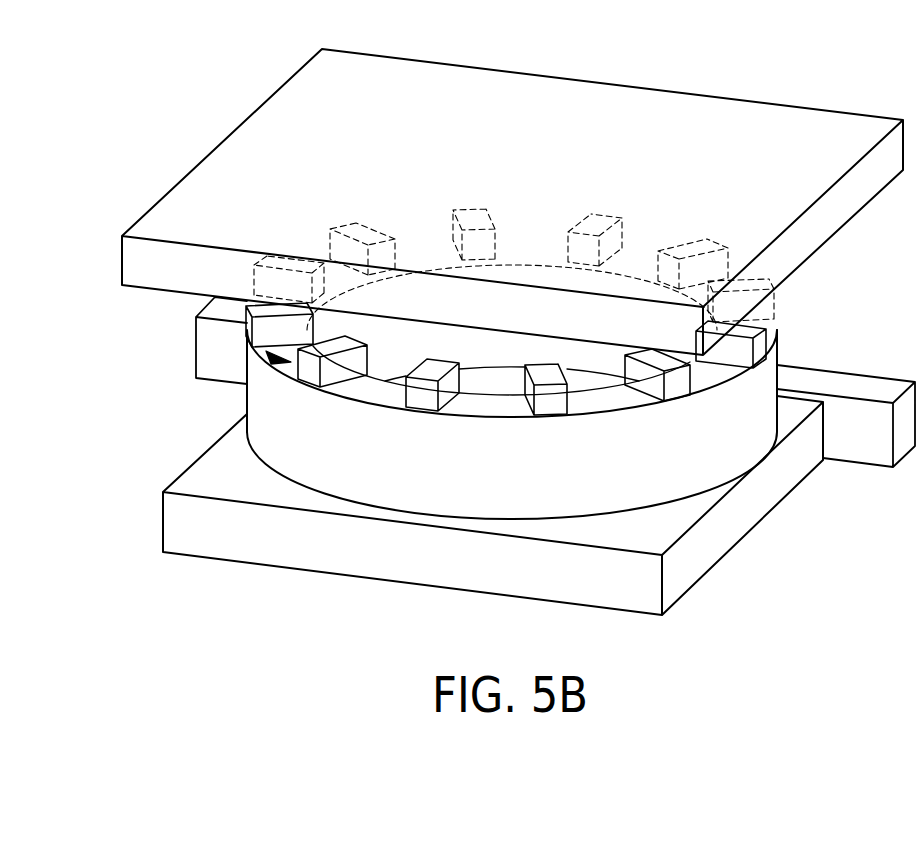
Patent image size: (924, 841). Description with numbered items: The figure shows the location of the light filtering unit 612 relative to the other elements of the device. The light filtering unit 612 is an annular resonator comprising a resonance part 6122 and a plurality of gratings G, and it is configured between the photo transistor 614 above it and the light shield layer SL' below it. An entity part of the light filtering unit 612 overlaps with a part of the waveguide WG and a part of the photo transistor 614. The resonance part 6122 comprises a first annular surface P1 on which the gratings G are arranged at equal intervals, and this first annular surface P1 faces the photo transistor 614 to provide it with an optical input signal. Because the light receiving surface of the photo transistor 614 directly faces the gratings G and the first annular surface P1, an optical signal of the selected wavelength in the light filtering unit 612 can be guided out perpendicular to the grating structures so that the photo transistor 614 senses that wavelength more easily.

The photo transistor 614 is at (562, 108).
The light filtering unit 612 is at (337, 447).
The resonance part 6122 is at (727, 433).
The gratings G is at (275, 332).
The first annular surface P1 is at (263, 353).
The waveguide WG is at (872, 387).
The light shield layer SL' is at (493, 522).